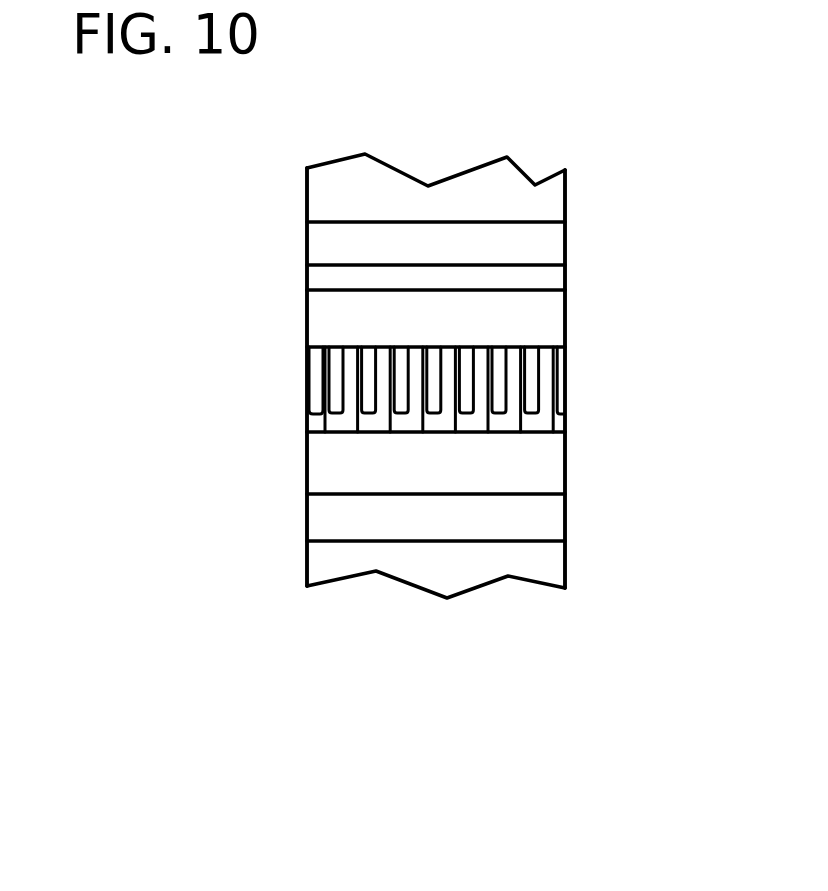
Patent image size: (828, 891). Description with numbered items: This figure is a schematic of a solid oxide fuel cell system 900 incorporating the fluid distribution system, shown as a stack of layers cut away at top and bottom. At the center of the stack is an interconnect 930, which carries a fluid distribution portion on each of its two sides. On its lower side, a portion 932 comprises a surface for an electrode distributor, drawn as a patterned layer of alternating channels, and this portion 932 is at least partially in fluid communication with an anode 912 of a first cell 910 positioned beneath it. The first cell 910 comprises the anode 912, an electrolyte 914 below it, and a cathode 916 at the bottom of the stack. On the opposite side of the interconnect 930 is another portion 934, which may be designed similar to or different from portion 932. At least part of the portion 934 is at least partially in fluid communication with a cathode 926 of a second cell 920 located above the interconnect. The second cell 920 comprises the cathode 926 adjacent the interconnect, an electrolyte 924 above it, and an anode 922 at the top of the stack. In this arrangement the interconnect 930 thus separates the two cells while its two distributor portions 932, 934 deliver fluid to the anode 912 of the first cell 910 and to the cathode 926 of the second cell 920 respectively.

The multilayer structure 900 is at (323, 127).
The first cell 910 is at (185, 448).
The anode 912 is at (307, 462).
The electrolyte 914 is at (307, 517).
The cathode 916 is at (307, 568).
The second cell 920 is at (185, 130).
The anode 922 is at (565, 193).
The electrolyte 924 is at (565, 245).
The cathode 926 is at (565, 273).
The interconnect 930 is at (185, 288).
The portion 932 is at (307, 387).
The portion 934 is at (565, 318).